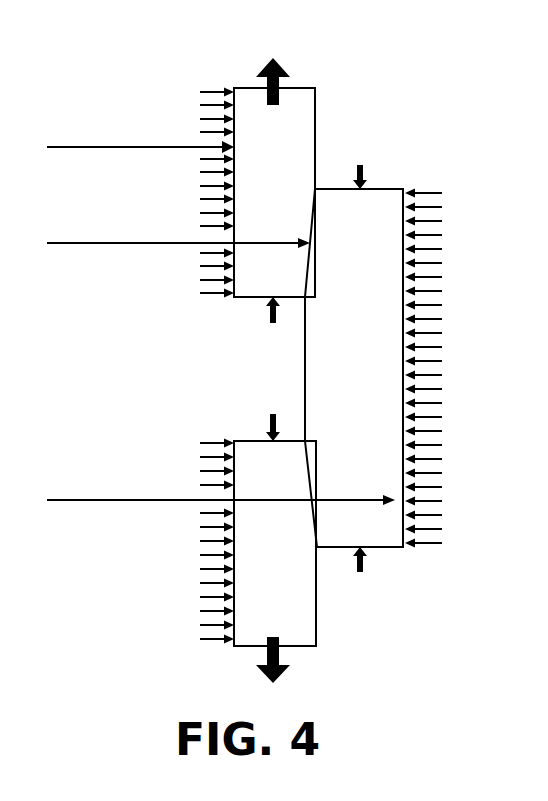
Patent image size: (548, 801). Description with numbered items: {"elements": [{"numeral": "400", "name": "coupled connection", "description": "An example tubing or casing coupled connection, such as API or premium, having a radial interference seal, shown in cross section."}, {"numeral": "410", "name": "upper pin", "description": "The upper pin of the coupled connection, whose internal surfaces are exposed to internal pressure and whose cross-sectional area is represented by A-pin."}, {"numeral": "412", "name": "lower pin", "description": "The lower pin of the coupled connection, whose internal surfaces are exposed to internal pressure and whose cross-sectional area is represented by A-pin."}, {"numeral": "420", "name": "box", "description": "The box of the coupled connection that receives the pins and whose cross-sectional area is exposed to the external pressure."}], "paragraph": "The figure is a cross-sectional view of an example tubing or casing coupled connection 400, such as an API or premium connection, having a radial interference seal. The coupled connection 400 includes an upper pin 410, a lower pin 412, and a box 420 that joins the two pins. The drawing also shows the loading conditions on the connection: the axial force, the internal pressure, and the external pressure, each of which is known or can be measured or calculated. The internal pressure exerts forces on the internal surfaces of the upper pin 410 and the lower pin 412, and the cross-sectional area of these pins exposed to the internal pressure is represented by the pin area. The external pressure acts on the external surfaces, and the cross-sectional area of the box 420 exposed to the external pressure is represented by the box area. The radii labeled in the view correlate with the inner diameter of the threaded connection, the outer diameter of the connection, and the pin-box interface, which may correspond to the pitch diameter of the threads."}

The hydraulic force balance diagram 400 is at (150, 50).
The upper pin 410 is at (317, 103).
The lower pin 412 is at (316, 630).
The box 420 is at (337, 405).